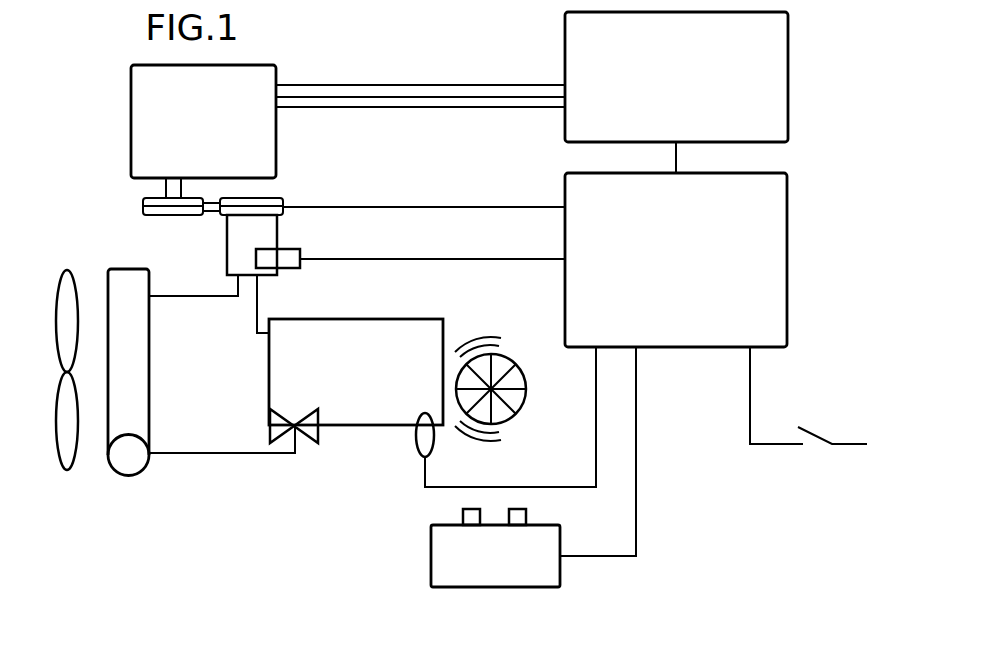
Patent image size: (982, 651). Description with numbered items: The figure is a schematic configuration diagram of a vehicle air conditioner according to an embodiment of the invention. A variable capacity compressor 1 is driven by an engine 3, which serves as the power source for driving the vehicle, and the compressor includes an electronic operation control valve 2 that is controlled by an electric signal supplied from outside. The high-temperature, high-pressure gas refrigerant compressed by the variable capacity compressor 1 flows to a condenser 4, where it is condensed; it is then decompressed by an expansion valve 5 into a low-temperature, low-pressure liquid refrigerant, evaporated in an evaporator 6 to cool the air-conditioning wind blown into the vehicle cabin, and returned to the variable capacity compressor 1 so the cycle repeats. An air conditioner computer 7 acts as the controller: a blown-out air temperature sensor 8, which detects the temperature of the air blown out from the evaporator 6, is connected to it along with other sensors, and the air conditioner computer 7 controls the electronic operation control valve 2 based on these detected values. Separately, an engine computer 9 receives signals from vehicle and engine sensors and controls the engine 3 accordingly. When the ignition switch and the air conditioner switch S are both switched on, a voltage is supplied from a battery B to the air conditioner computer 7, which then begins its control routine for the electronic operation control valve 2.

The variable capacity compressor 1 is at (227, 244).
The electronic operation control valve 2 is at (292, 249).
The engine 3 is at (131, 122).
The condenser 4 is at (108, 281).
The expansion valve 5 is at (312, 445).
The evaporator 6 is at (393, 319).
The air conditioner computer 7 is at (787, 262).
The blown-out air temperature sensor 8 is at (421, 457).
The engine computer 9 is at (788, 70).
The battery B is at (494, 589).
The air conditioner switch S is at (813, 449).